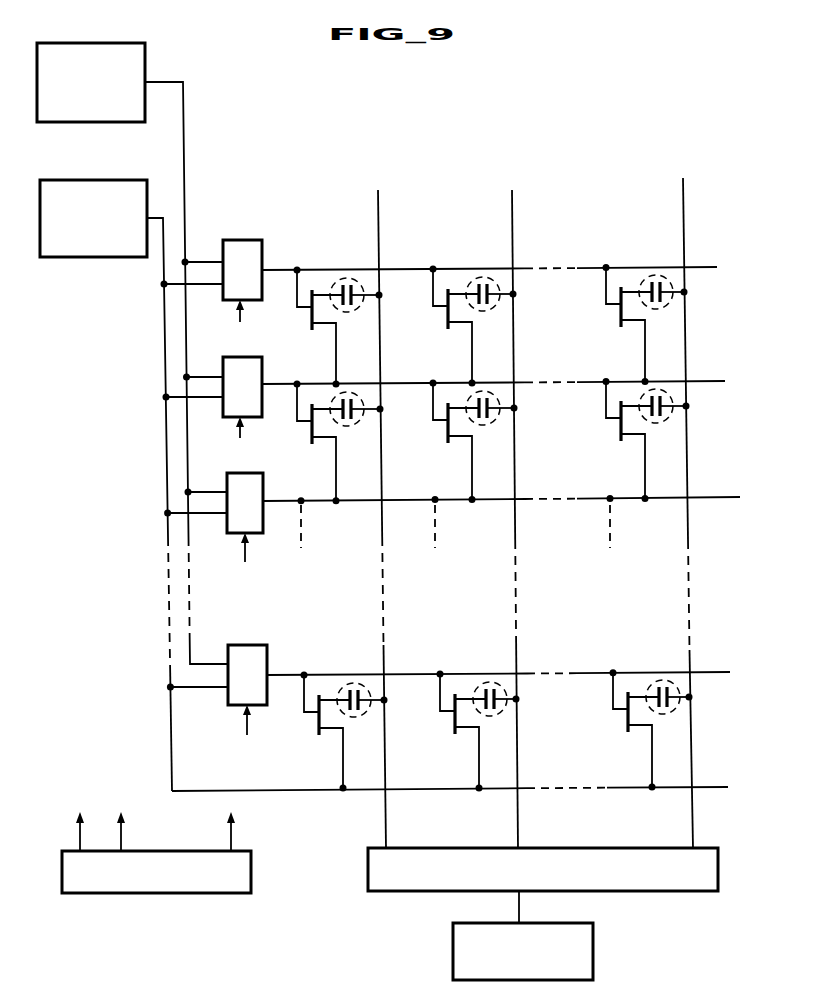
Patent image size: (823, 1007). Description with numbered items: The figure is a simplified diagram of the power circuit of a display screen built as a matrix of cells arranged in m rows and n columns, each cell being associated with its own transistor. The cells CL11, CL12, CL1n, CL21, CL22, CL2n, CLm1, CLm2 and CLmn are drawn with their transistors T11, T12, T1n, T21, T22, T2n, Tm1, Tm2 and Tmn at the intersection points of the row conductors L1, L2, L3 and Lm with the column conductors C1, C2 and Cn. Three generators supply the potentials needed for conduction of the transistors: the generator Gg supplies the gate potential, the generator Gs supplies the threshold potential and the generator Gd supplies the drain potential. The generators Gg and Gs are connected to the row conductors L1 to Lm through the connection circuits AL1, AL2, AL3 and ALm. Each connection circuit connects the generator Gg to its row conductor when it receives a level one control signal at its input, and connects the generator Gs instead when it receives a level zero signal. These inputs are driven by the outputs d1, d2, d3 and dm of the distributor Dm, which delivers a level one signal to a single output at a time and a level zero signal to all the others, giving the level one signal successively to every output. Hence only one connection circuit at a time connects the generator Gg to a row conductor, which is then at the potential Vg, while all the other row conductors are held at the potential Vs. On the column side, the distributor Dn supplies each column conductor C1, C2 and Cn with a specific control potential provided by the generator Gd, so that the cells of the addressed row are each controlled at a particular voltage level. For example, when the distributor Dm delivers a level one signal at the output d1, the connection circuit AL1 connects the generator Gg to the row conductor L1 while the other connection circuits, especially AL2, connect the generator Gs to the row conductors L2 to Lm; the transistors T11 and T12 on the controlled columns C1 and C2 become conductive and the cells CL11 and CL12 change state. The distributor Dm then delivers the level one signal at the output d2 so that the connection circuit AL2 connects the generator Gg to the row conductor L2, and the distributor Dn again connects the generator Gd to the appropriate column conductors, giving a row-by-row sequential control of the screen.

The gate potential generator Gg is at (100, 43).
The threshold potential generator Gs is at (75, 180).
The connection circuit AL1 is at (238, 240).
The connection circuit AL2 is at (248, 345).
The connection circuit AL3 is at (263, 488).
The connection circuit ALm is at (250, 645).
The distributor output d1 is at (224, 314).
The distributor output d2 is at (223, 431).
The distributor output d3 is at (228, 549).
The distributor output dm is at (225, 723).
The column conductor C1 is at (378, 205).
The column conductor C2 is at (512, 205).
The column conductor Cn is at (683, 195).
The row conductor L1 is at (697, 267).
The row conductor L2 is at (700, 381).
The row conductor L3 is at (712, 497).
The row conductor Lm is at (714, 672).
The cell CL11 is at (345, 278).
The cell CL12 is at (480, 277).
The cell CL1n is at (665, 306).
The cell CL21 is at (357, 409).
The cell CL22 is at (498, 404).
The cell CL2n is at (665, 420).
The cell CLm1 is at (352, 683).
The cell CLm2 is at (488, 682).
The cell CLmn is at (660, 680).
The transistor T11 is at (311, 328).
The transistor T12 is at (447, 312).
The transistor T1n is at (620, 312).
The transistor T21 is at (310, 442).
The transistor T22 is at (447, 442).
The transistor T2n is at (620, 428).
The transistor Tm1 is at (318, 732).
The transistor Tm2 is at (454, 731).
The transistor Tmn is at (627, 728).
The distributor Dm is at (145, 893).
The distributor Dn is at (368, 872).
The drain potential generator Gd is at (593, 946).